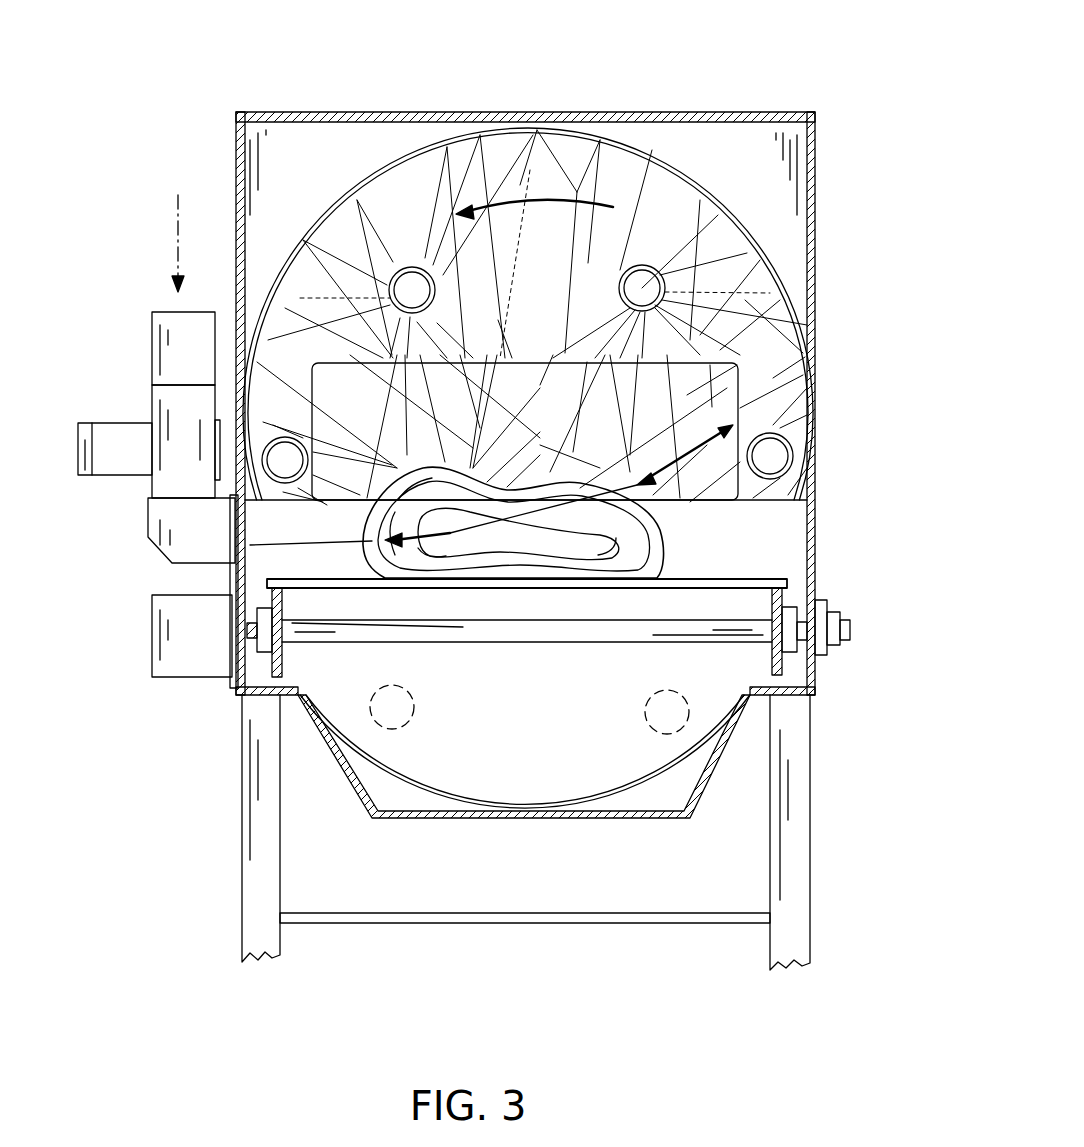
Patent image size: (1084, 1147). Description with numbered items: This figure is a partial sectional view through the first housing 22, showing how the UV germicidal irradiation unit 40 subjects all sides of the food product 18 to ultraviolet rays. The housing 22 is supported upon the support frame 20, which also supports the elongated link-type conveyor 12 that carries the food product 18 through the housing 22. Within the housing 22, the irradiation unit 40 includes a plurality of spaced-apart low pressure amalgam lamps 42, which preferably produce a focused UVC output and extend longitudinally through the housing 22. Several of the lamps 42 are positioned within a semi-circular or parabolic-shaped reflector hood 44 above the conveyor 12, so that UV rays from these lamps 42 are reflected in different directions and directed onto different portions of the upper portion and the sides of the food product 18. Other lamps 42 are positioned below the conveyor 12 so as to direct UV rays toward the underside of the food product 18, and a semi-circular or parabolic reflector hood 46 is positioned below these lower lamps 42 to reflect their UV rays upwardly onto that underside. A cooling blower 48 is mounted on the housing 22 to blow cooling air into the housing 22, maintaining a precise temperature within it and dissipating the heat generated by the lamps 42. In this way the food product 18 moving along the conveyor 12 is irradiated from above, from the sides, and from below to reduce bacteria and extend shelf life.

The first housing 22 is at (656, 103).
The reflector hood 44 is at (710, 190).
The ultraviolet germicidal irradiation unit 40 is at (735, 232).
The low pressure amalgam lamps 42 is at (675, 283).
The food product 18 is at (607, 528).
The conveyor 12 is at (755, 571).
The lower reflector hood 46 is at (693, 753).
The support frame 20 is at (228, 770).
The cooling blower 48 is at (145, 415).